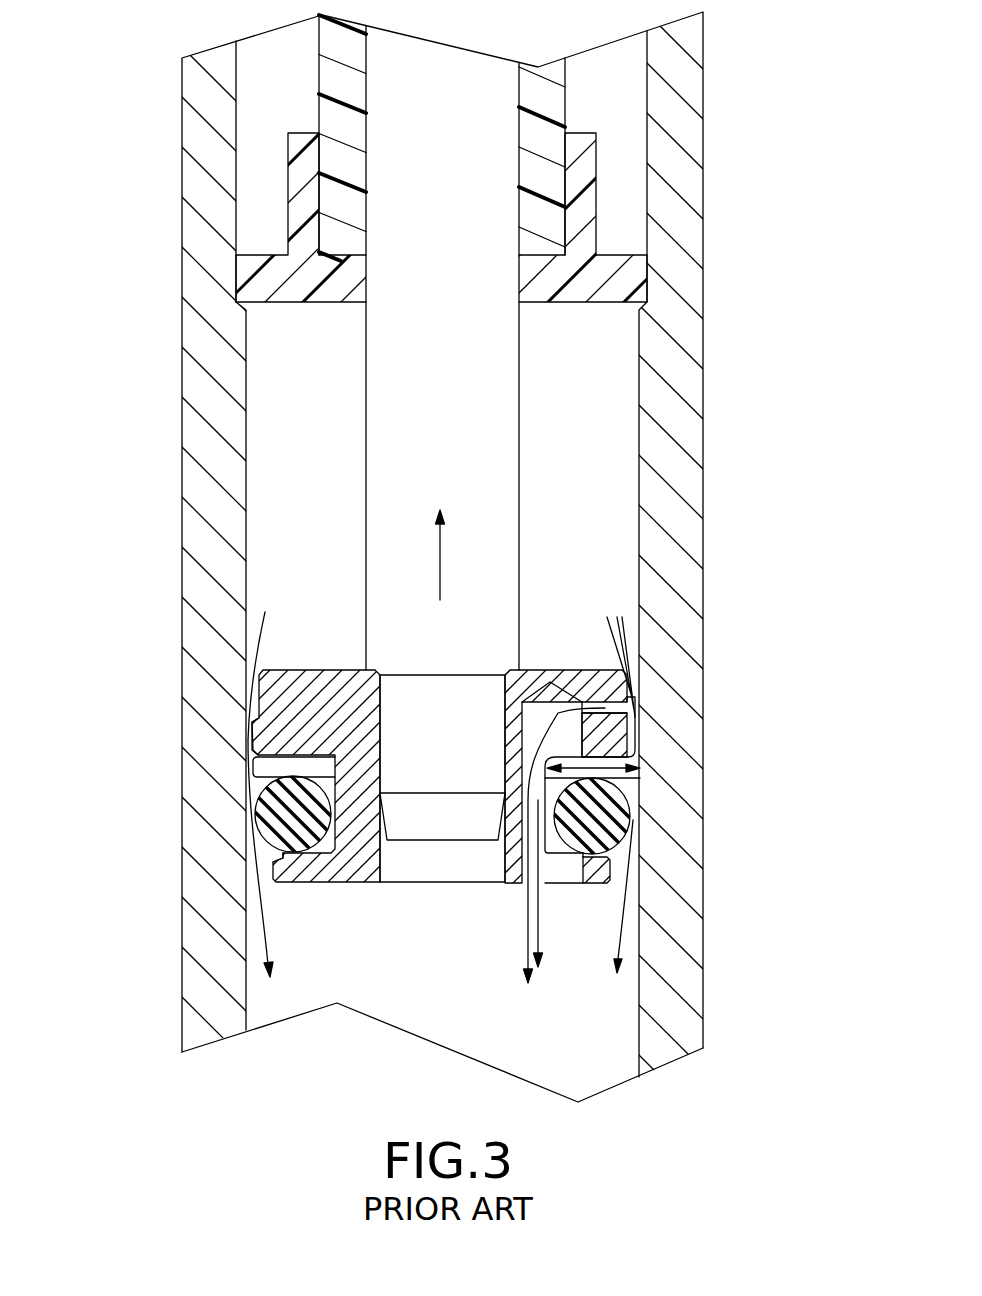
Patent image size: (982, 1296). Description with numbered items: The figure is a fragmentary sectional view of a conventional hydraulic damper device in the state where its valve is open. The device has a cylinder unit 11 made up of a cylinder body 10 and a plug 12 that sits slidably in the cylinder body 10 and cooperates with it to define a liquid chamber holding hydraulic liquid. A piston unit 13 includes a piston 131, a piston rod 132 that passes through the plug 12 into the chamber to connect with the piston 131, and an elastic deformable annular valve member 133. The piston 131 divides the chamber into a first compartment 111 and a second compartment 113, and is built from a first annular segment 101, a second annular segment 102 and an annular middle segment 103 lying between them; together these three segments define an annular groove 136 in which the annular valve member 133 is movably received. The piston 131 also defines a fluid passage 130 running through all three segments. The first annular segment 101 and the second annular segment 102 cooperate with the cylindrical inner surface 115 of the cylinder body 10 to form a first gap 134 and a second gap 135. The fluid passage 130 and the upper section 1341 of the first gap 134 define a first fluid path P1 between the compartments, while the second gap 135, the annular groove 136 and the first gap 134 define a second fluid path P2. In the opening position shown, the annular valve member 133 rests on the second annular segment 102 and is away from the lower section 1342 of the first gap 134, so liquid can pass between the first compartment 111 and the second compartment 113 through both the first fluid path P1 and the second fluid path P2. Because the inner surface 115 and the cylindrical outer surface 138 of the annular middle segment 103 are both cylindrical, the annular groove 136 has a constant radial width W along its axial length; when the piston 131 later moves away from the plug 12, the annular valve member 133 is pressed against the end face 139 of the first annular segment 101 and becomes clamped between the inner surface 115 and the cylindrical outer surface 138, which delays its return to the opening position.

The cylinder body 10 is at (677, 825).
The cylinder unit 11 is at (730, 111).
The plug 12 is at (597, 230).
The piston rod 132 is at (453, 367).
The first compartment 111 is at (590, 420).
The piston unit 13 is at (540, 564).
The piston 131 is at (560, 655).
The upper section of the first gap 1341 is at (637, 697).
The lower section of the first gap 1342 is at (637, 717).
The fluid passage 130 is at (558, 738).
The radial width W is at (645, 767).
The annular valve member 133 is at (565, 775).
The second gap 135 is at (617, 862).
The end face 139 is at (258, 716).
The first gap 134 is at (257, 718).
The first annular segment 101 is at (257, 735).
The annular middle segment 103 is at (278, 763).
The annular groove 136 is at (277, 773).
The second annular segment 102 is at (273, 868).
The inner surface 115 is at (237, 912).
The cylindrical outer surface 138 is at (262, 697).
The second compartment 113 is at (600, 1048).
The first fluid path P1 is at (559, 861).
The second fluid path P2 is at (614, 917).